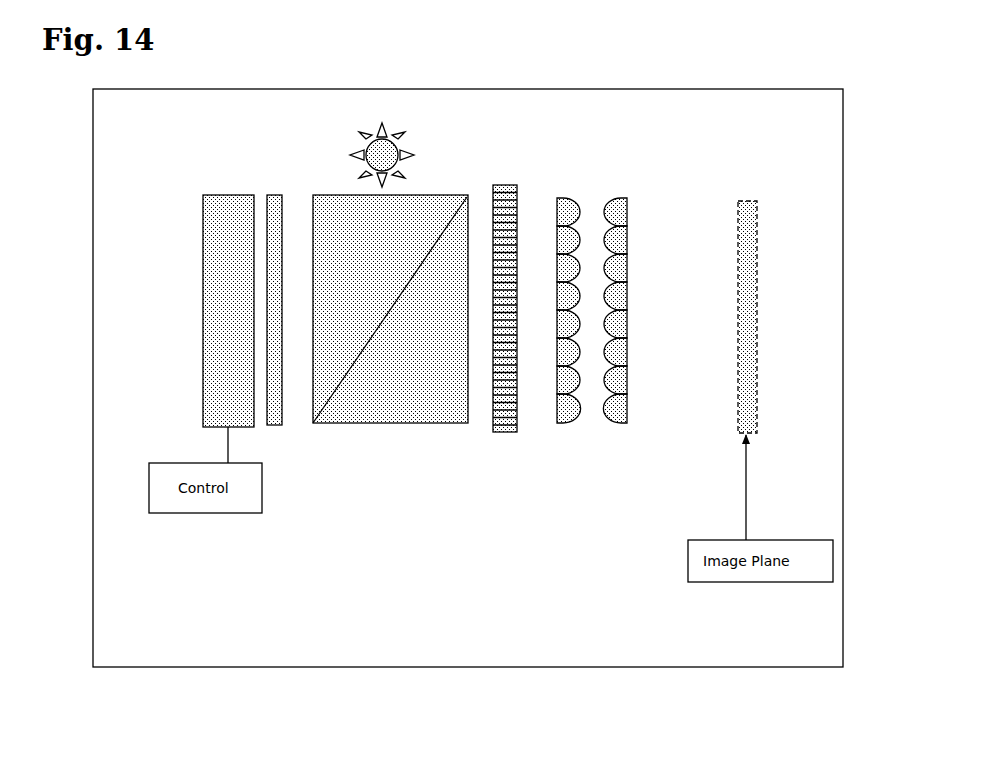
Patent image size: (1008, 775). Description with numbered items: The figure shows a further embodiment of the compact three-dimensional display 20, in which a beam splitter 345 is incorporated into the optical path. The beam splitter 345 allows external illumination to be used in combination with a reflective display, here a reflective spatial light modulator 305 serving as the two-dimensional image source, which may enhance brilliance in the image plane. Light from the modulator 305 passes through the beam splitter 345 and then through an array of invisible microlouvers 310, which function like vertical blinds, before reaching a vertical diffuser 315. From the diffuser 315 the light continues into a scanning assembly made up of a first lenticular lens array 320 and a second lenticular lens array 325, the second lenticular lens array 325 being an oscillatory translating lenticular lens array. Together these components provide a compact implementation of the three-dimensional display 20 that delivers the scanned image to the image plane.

The compact 3D display 20 is at (757, 653).
The spatial light modulator 305 is at (230, 193).
The array of microlouvers 310 is at (498, 434).
The vertical diffuser 315 is at (273, 427).
The first lenticular lens array 320 is at (566, 427).
The second lenticular lens array 325 is at (620, 195).
The beam splitter 345 is at (430, 196).